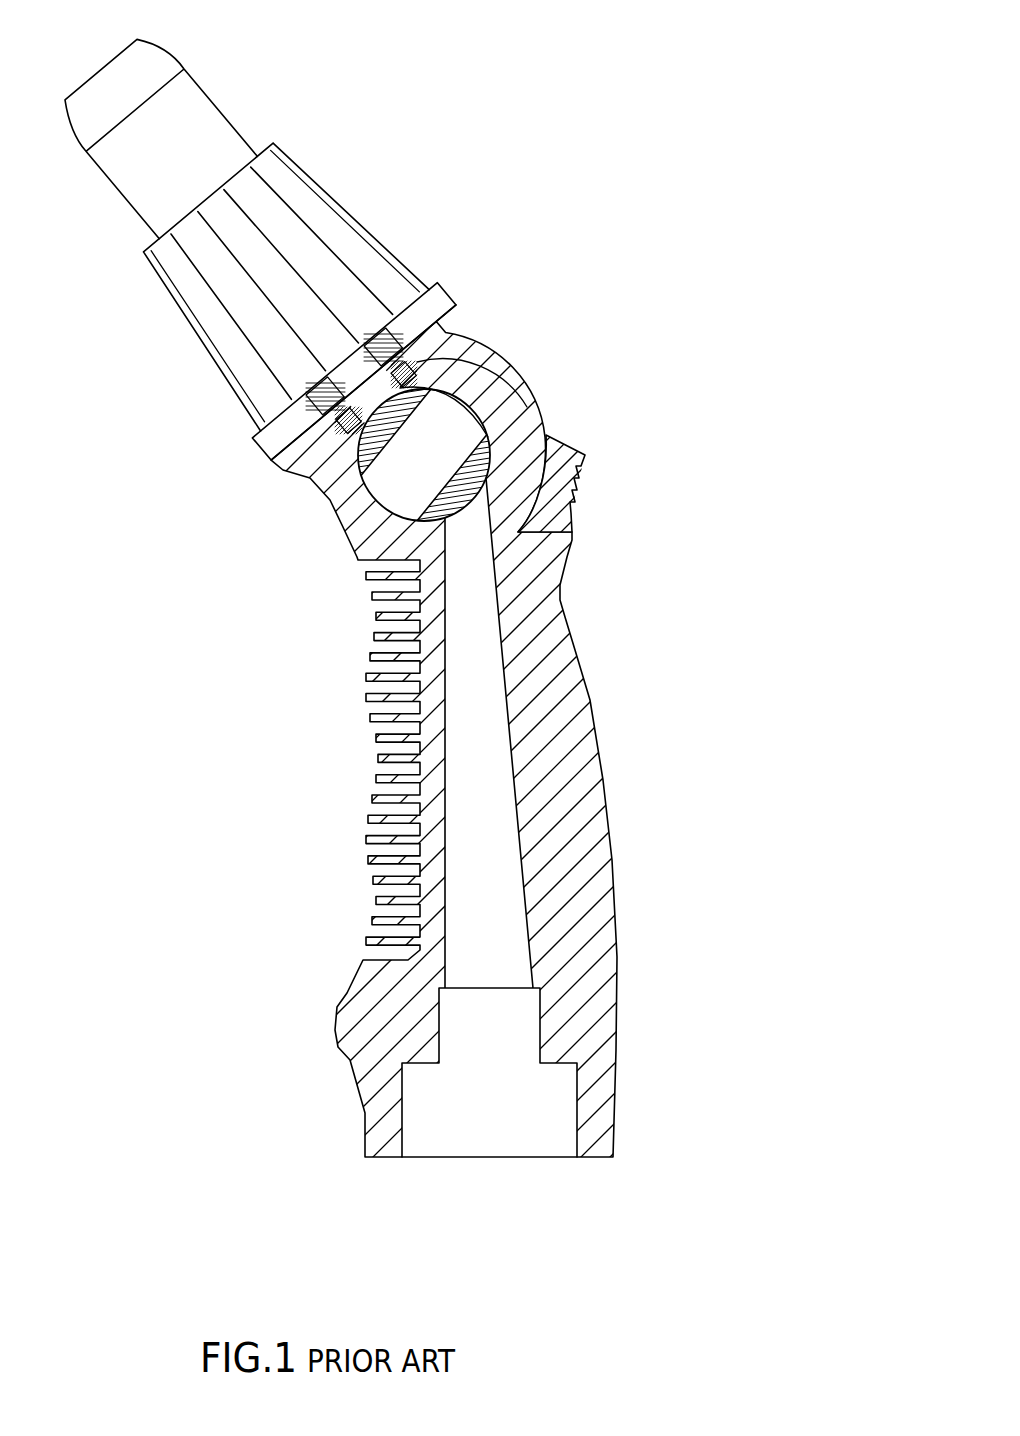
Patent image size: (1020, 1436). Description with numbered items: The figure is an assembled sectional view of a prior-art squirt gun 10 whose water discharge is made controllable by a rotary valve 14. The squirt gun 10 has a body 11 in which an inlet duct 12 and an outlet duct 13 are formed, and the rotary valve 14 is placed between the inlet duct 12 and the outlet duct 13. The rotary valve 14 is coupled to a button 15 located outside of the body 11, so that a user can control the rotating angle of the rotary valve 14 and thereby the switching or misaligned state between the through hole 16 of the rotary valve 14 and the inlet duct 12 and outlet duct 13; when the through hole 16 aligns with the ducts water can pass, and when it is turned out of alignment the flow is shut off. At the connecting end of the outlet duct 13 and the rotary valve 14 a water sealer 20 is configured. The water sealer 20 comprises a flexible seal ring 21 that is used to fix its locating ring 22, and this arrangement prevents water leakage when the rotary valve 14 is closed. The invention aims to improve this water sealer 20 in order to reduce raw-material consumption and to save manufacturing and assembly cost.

The squirt gun 10 is at (414, 580).
The body 11 is at (560, 617).
The inlet duct 12 is at (500, 747).
The outlet duct 13 is at (315, 397).
The rotary valve 14 is at (513, 367).
The button 15 is at (577, 488).
The through hole 16 is at (457, 422).
The water sealer 20 is at (309, 249).
The flexible seal ring 21 is at (443, 334).
The locating ring 22 is at (405, 310).